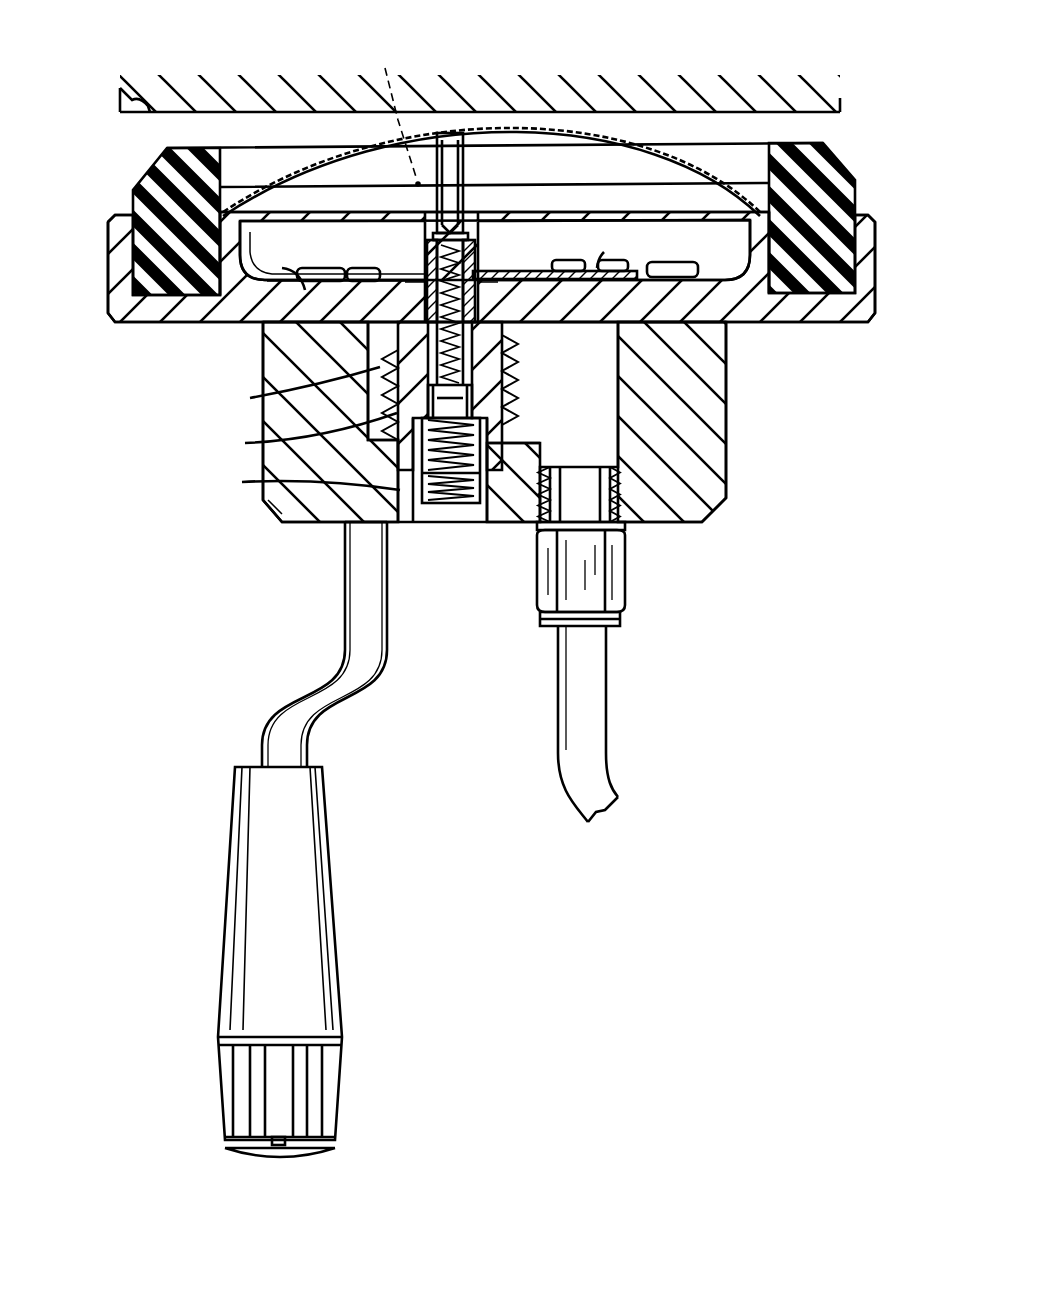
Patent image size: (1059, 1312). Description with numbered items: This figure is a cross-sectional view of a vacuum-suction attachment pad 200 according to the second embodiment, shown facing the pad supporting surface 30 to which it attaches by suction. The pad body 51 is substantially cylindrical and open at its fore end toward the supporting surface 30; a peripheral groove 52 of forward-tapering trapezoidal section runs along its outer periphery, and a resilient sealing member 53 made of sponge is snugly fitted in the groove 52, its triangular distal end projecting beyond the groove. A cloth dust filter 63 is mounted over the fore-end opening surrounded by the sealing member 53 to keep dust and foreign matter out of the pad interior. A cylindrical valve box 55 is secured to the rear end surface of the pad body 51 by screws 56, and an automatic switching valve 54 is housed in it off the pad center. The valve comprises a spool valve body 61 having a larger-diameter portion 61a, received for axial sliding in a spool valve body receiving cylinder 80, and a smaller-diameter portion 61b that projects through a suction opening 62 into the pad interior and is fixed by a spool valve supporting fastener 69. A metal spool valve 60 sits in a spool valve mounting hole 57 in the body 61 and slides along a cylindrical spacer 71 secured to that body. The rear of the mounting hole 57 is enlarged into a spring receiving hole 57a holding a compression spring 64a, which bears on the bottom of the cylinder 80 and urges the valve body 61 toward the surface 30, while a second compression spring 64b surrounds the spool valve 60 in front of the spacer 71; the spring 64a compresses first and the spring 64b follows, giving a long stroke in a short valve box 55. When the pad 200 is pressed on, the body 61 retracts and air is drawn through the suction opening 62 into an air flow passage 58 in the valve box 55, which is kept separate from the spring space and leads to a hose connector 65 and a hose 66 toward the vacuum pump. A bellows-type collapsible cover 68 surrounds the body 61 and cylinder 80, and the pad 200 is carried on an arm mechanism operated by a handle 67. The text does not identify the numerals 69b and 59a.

The vacuum-suction attachment pad 200 is at (208, 374).
The pad supporting surface 30 is at (122, 96).
The pad body 51 is at (116, 215).
The peripheral groove 52 is at (167, 277).
The resilient sealing member 53 is at (150, 172).
The dust filter 63 is at (345, 137).
The compression spring 64b is at (398, 120).
The spool valve mounting hole 57 is at (452, 133).
The spool valve 60 is at (447, 222).
The smaller-diameter portion 61b is at (482, 250).
The screws 56 is at (682, 268).
The spool valve supporting fastener 69 is at (543, 268).
The suction opening 62 is at (492, 288).
The spool valve body 61 is at (500, 335).
The compression spring 64a is at (457, 505).
The plunger 69b is at (485, 375).
The collapsible cover 68 is at (495, 408).
The automatic switching valve 54 is at (457, 403).
The valve box 55 is at (710, 440).
The air flow passage 58 is at (634, 547).
The larger-diameter portion 61a is at (291, 435).
The spring housing 59a is at (333, 470).
The cylindrical spacer 71 is at (523, 443).
The spool valve body receiving cylinder 80 is at (332, 507).
The spring receiving hole 57a is at (455, 500).
The handle 67 is at (263, 887).
The hose connector 65 is at (620, 524).
The hose 66 is at (600, 748).